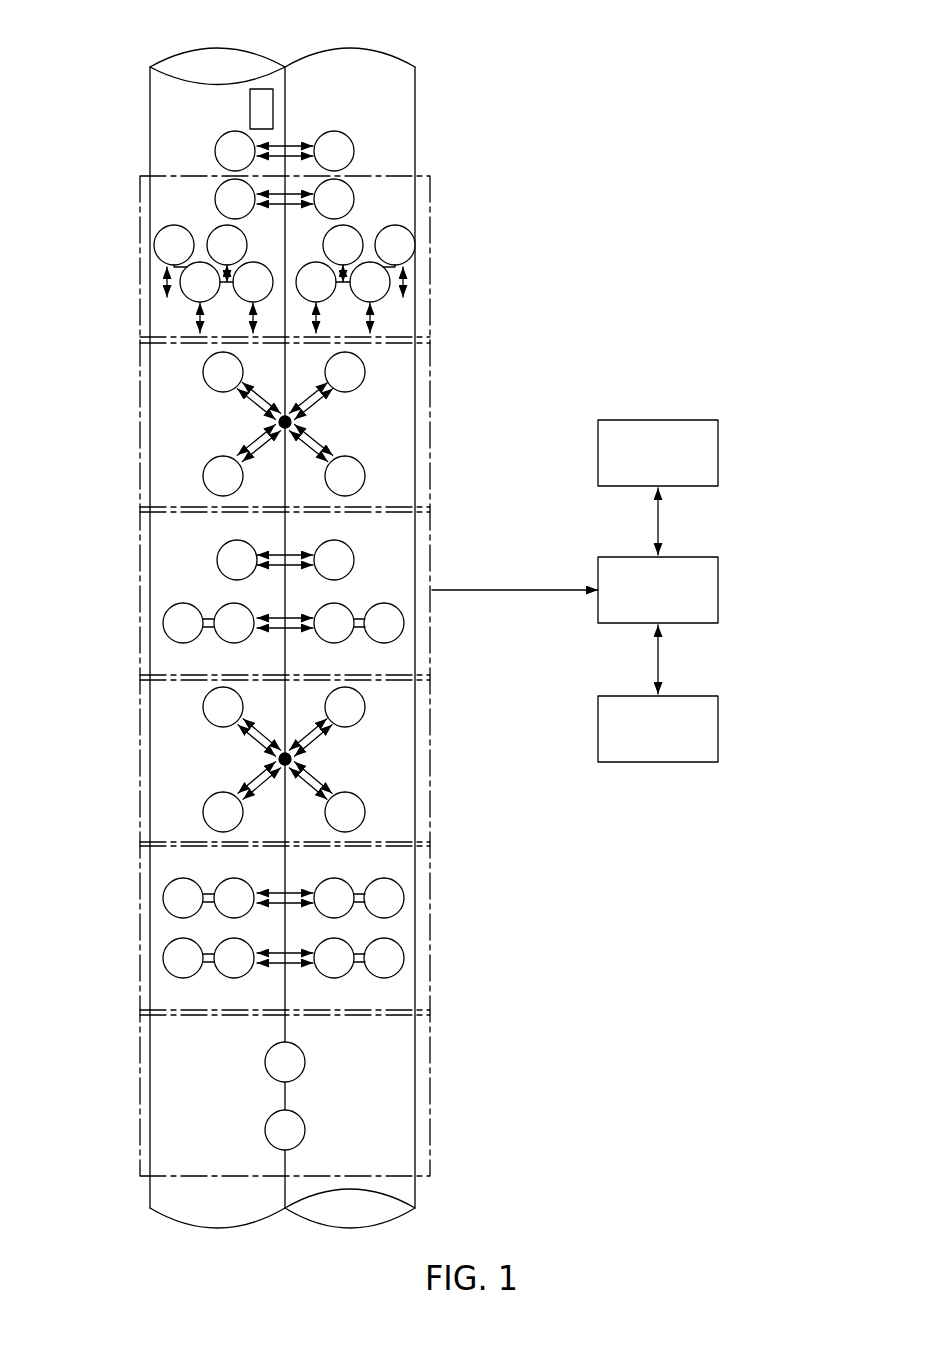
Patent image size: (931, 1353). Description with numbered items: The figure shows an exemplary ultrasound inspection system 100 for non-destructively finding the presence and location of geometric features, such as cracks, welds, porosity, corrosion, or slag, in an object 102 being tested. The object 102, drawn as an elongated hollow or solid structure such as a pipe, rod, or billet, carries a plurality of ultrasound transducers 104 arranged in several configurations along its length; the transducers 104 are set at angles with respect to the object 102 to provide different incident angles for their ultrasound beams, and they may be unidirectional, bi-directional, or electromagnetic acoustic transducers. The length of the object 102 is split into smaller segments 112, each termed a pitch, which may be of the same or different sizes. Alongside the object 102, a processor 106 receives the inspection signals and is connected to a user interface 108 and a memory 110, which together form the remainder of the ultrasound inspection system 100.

The ultrasound inspection system 100 is at (591, 57).
The object 102 is at (150, 108).
The ultrasound transducers 104 is at (355, 560).
The processor 106 is at (720, 578).
The user interface 108 is at (720, 433).
The memory 110 is at (720, 716).
The segments 112 is at (432, 326).